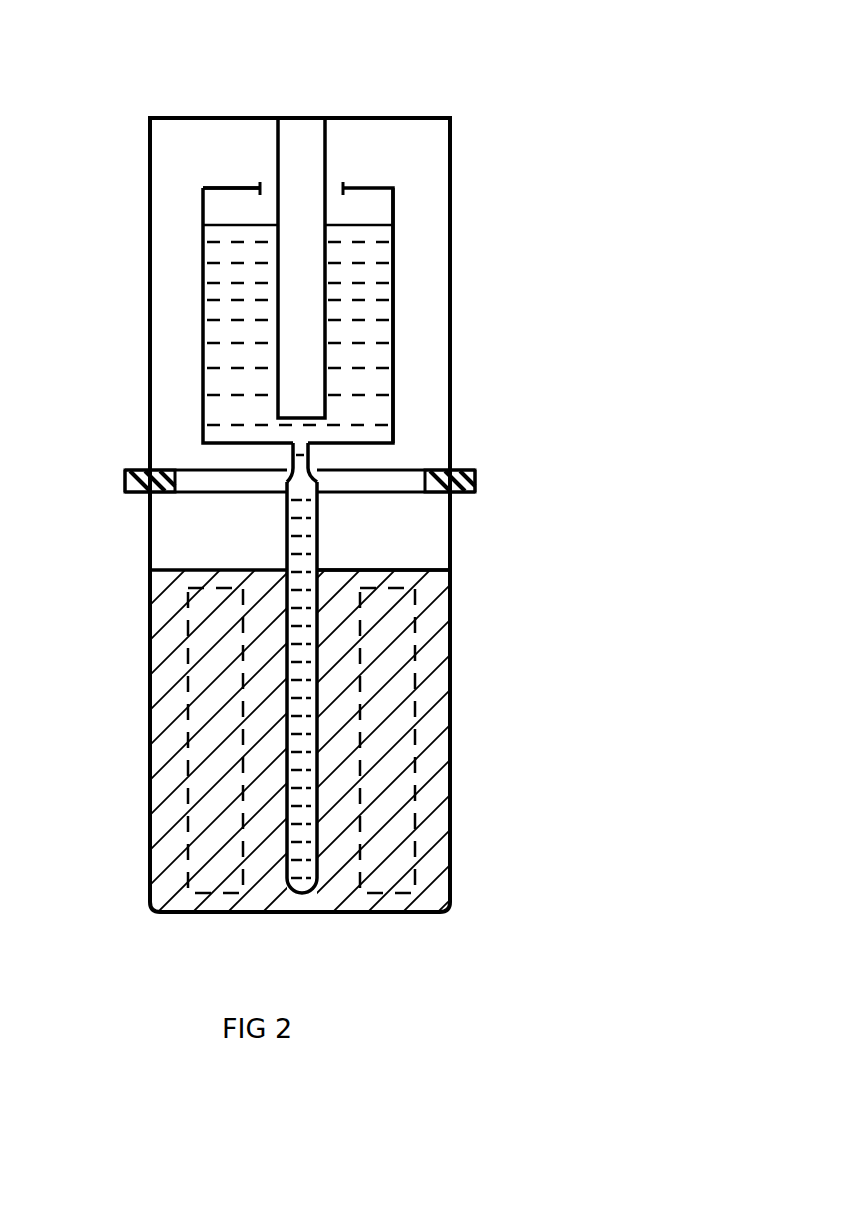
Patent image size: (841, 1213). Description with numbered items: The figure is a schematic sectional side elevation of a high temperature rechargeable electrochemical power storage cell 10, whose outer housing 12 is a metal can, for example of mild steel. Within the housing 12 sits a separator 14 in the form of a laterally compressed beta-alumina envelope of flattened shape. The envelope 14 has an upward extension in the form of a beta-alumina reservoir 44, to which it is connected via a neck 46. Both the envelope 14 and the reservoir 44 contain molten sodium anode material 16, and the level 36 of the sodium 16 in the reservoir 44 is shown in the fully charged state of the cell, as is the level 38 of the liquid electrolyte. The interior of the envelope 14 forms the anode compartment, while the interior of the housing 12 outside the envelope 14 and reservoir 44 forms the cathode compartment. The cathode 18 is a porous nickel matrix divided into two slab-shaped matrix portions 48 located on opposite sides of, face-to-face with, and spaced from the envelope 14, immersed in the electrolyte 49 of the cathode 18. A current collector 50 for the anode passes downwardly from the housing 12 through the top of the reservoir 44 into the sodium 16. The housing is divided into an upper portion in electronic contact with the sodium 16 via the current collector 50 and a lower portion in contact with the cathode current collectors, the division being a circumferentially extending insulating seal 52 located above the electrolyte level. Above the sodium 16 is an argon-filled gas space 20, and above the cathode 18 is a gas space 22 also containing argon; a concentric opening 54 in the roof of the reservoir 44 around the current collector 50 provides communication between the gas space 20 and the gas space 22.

The cell 10 is at (488, 48).
The housing 12 is at (150, 368).
The separator 14 is at (285, 530).
The sodium anode material 16 is at (367, 403).
The cathode 18 is at (395, 793).
The gas space 20 is at (367, 207).
The gas space 22 is at (428, 155).
The level of the sodium 36 is at (232, 212).
The level of liquid electrolyte 38 is at (372, 550).
The reservoir 44 is at (395, 272).
The neck 46 is at (274, 470).
The matrix portions 48 is at (190, 622).
The electrolyte 49 is at (437, 597).
The current collector 50 is at (300, 135).
The insulating seal 52 is at (125, 478).
The concentric opening 54 is at (266, 172).